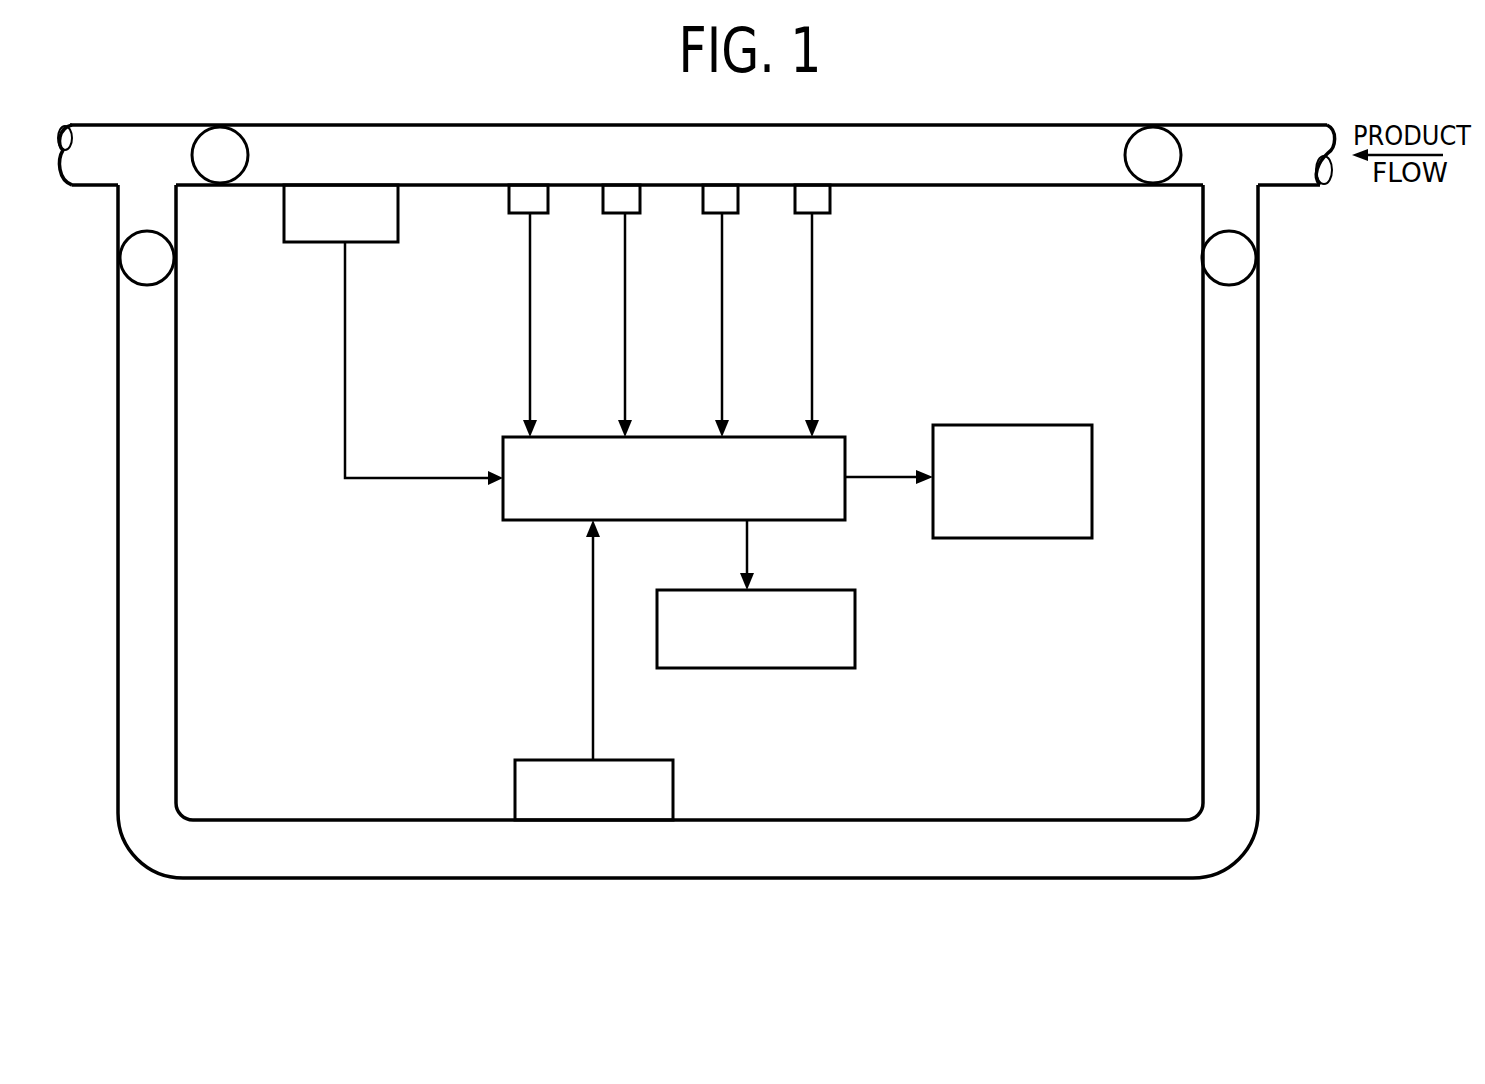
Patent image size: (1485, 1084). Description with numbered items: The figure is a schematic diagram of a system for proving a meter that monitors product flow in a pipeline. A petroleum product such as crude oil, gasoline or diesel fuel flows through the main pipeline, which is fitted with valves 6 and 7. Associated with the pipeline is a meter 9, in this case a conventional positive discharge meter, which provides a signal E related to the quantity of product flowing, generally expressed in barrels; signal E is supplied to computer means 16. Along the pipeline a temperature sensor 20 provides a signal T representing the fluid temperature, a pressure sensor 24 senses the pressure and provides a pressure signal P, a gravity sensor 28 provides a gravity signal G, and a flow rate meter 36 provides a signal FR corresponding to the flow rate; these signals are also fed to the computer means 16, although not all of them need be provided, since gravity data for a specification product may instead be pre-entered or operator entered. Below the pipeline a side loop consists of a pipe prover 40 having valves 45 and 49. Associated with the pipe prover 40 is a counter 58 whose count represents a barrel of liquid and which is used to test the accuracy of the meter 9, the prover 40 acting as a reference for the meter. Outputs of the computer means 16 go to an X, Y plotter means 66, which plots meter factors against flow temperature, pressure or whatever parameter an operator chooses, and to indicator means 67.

The valve 6 is at (1152, 132).
The valve 7 is at (202, 140).
The meter 9 is at (378, 242).
The computer means 16 is at (652, 438).
The temperature sensor 20 is at (509, 200).
The pressure sensor 24 is at (612, 196).
The gravity sensor 28 is at (710, 198).
The flow rate meter 36 is at (802, 198).
The pipe prover 40 is at (1243, 688).
The valve 45 is at (1245, 258).
The valve 49 is at (165, 258).
The counter 58 is at (673, 787).
The X, Y plotter means 66 is at (1020, 425).
The indicator means 67 is at (855, 623).
The signal E is at (343, 365).